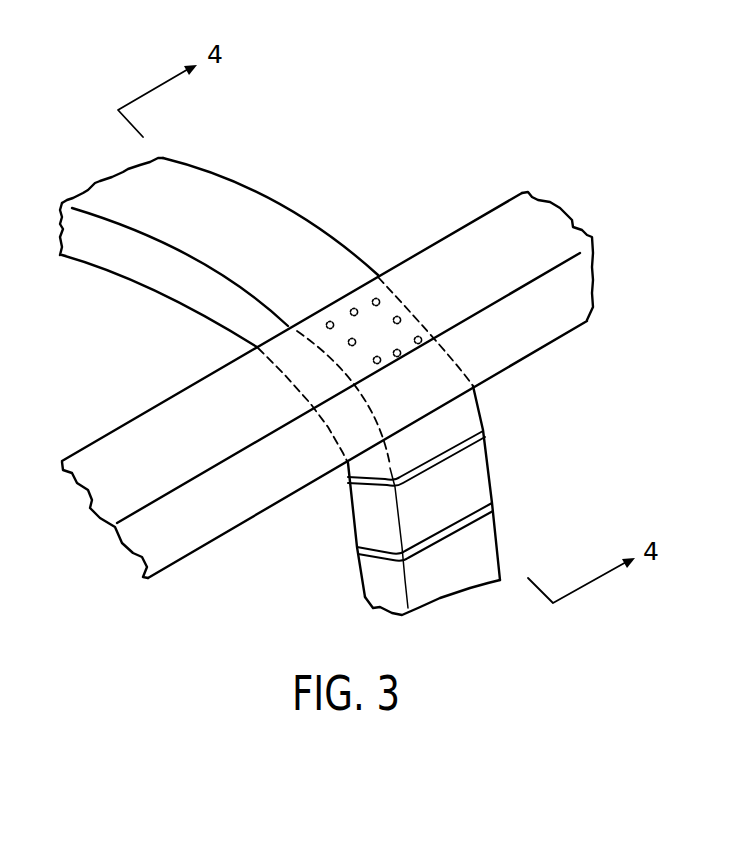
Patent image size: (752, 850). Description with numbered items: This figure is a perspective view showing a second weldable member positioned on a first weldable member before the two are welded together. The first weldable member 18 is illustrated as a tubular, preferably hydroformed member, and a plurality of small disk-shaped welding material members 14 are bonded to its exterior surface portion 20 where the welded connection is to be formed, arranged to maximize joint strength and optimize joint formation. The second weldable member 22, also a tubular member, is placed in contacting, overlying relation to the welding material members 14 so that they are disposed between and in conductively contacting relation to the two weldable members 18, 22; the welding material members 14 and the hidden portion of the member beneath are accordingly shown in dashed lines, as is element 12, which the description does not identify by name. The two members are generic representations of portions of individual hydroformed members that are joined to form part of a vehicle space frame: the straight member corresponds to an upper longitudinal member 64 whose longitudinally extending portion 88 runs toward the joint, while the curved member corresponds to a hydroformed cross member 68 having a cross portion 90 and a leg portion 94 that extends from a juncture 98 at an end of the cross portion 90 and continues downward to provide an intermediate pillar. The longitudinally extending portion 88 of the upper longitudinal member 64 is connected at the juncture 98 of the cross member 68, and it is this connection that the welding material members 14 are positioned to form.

The hidden joint connection 12 is at (412, 277).
The welding material members 14 is at (378, 268).
The first weldable member 18 is at (219, 222).
The exterior surface portion 20 is at (457, 492).
The second weldable member 22 is at (352, 356).
The upper longitudinal member 64 is at (548, 220).
The cross member 68 is at (283, 213).
The longitudinally extending portion 88 is at (592, 235).
The cross portion 90 is at (250, 203).
The leg portions 94 is at (478, 554).
The juncture 98 is at (453, 423).